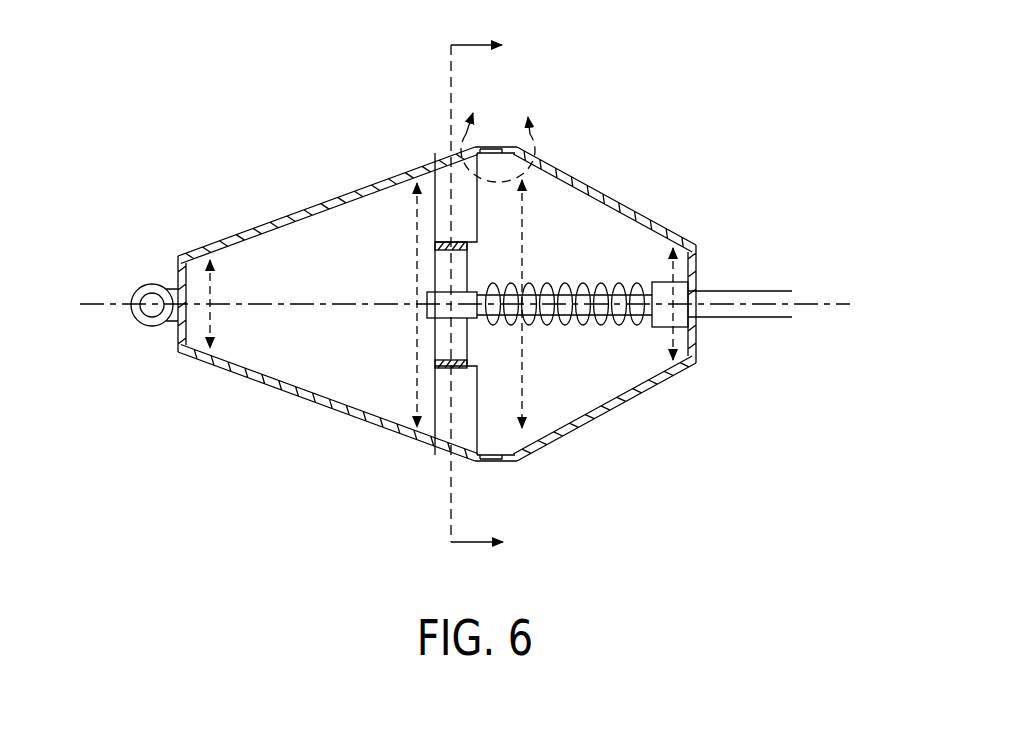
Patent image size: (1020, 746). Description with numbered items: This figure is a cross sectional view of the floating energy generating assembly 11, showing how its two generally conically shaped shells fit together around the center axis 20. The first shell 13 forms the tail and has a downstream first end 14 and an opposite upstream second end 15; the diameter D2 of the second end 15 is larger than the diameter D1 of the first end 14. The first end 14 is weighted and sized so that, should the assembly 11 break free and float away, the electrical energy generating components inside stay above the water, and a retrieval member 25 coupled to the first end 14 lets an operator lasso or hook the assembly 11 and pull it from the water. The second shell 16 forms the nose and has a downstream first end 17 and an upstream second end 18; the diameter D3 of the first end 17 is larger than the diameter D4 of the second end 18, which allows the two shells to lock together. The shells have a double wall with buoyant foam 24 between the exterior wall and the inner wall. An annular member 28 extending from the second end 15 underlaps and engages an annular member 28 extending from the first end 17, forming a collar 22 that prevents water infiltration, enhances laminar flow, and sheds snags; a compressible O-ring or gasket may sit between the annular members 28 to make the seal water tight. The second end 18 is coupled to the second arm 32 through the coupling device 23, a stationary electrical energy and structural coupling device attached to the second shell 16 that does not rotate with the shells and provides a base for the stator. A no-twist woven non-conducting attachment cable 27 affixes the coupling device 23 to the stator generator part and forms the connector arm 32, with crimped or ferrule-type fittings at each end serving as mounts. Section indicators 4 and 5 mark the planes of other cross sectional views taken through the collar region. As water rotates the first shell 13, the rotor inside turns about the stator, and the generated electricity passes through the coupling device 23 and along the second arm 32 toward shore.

The energy generating assembly 11 is at (668, 100).
The first shell 13 is at (320, 202).
The first end of the first shell 14 is at (190, 370).
The second end of the first shell 15 is at (437, 477).
The second shell 16 is at (592, 185).
The first end of the second shell 17 is at (552, 483).
The second end of the second shell 18 is at (702, 390).
The center axis 20 is at (108, 302).
The collar 22 is at (487, 462).
The coupling device 23 is at (663, 328).
The buoyant foam 24 is at (307, 400).
The retrieval member 25 is at (143, 330).
The attachment cable 27 is at (565, 325).
The annular member 28 is at (493, 147).
The second arm 32 is at (767, 288).
The section line 4- 4 is at (483, 295).
The section line 5- 5 is at (502, 134).
The diameter of the first end of the first shell D1 is at (212, 290).
The diameter of the second end of the first shell D2 is at (415, 272).
The diameter of the first end of the second shell D3 is at (524, 275).
The diameter of the second end of the second shell D4 is at (672, 268).